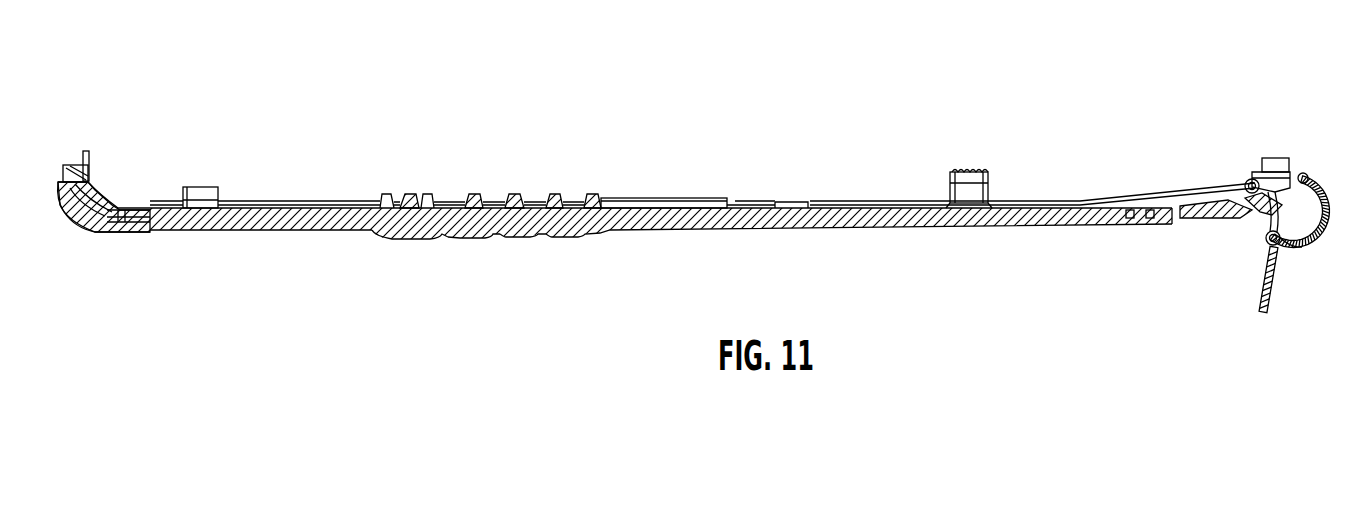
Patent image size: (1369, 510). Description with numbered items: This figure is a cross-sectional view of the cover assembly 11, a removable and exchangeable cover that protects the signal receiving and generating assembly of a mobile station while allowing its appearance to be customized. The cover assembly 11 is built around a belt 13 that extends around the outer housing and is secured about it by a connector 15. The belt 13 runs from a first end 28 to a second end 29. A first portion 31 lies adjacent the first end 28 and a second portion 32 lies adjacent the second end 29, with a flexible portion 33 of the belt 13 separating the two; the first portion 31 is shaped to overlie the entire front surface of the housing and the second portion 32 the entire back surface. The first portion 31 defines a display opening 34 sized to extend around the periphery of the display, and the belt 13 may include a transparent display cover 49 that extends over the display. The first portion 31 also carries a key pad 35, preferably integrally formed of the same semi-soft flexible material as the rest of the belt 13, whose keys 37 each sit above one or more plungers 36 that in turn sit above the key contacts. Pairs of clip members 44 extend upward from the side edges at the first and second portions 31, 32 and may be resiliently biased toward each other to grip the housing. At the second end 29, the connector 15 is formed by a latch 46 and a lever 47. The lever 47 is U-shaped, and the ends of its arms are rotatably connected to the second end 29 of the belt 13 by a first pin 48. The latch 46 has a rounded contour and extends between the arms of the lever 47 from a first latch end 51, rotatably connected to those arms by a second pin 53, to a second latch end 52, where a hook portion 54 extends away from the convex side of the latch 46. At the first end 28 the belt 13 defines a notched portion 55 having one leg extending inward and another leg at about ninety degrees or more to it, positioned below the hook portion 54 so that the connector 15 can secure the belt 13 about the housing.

The cover assembly 11 is at (618, 82).
The belt 13 is at (873, 228).
The connector 15 is at (1218, 311).
The first end 28 is at (67, 208).
The second end 29 is at (1266, 158).
The first portion 31 is at (273, 222).
The second portion 32 is at (998, 222).
The flexible portion 33 is at (665, 228).
The display opening 34 is at (379, 240).
The key pad 35 is at (471, 238).
The plungers 36 is at (510, 193).
The keys 37 is at (512, 238).
The clip members 44 is at (194, 190).
The latch 46 is at (1303, 247).
The lever 47 is at (1275, 287).
The first pin 48 is at (1252, 184).
The display cover 49 is at (237, 220).
The first latch end 51 is at (1262, 243).
The second latch end 52 is at (1323, 215).
The second pin 53 is at (1267, 233).
The hook portion 54 is at (1306, 174).
The notched portion 55 is at (93, 168).